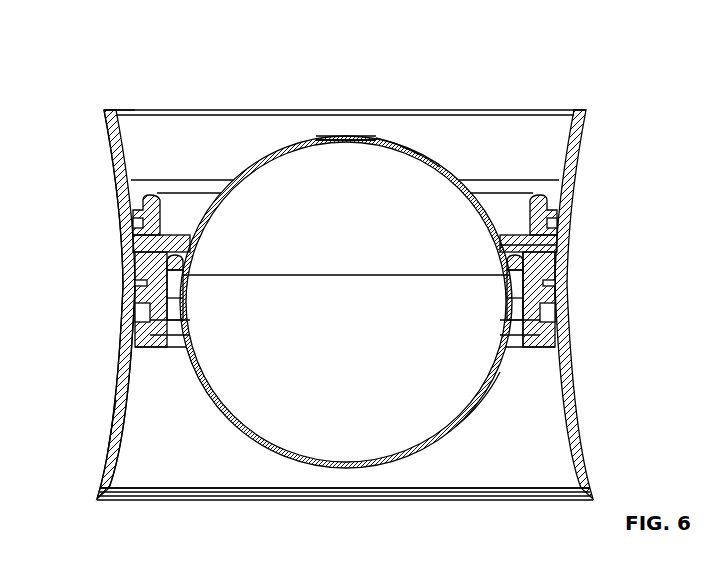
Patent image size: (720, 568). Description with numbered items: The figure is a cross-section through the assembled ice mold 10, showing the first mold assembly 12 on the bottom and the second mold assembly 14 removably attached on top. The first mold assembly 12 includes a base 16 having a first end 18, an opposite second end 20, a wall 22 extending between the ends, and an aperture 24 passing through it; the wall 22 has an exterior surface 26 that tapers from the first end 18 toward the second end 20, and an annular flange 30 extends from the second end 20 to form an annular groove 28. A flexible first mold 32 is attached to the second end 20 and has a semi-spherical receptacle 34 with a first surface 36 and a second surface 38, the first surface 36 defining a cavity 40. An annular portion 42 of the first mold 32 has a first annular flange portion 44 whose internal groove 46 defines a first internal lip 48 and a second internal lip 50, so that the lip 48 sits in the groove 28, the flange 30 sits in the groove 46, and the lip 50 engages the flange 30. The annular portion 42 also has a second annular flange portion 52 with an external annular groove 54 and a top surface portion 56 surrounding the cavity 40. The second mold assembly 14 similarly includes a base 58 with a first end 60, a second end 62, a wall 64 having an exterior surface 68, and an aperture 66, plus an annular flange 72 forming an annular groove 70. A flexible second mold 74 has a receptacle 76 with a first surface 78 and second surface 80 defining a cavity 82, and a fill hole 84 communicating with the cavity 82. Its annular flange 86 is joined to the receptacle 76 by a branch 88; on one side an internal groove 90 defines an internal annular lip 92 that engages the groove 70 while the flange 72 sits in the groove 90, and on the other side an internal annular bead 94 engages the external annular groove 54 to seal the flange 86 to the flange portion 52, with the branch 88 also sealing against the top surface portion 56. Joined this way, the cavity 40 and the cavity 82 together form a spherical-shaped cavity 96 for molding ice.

The ice mold 10 is at (512, 64).
The first mold assembly 12 is at (84, 384).
The second mold assembly 14 is at (84, 247).
The base 16 is at (115, 432).
The first end 18 is at (98, 500).
The second end 20 is at (183, 323).
The wall 22 is at (117, 393).
The aperture 24 is at (195, 447).
The exterior surface 26 is at (105, 453).
The annular groove 28 is at (140, 315).
The annular flange 30 is at (140, 300).
The first mold 32 is at (555, 308).
The receptacle 34 is at (488, 392).
The first surface 36 is at (448, 427).
The second surface 38 is at (462, 428).
The cavity 40 is at (288, 366).
The annular portion 42 is at (565, 285).
The first annular flange portion 44 is at (560, 320).
The internal groove 46 is at (540, 305).
The first internal lip 48 is at (560, 338).
The second internal lip 50 is at (540, 290).
The second annular flange portion 52 is at (560, 262).
The external annular groove 54 is at (537, 290).
The top surface portion 56 is at (545, 252).
The base 58 is at (110, 166).
The first end 60 is at (107, 110).
The second end 62 is at (140, 218).
The wall 64 is at (128, 182).
The aperture 66 is at (170, 128).
The exterior surface 68 is at (103, 130).
The annular groove 70 is at (150, 210).
The annular flange 72 is at (128, 250).
The second mold 74 is at (128, 277).
The receptacle 76 is at (345, 141).
The first surface 78 is at (418, 156).
The second surface 80 is at (400, 141).
The cavity 82 is at (276, 256).
The fill hole 84 is at (354, 135).
The annular flange 86 is at (572, 226).
The branch 88 is at (515, 235).
The internal groove 90 is at (530, 228).
The internal annular lip 92 is at (545, 210).
The internal annular bead 94 is at (522, 248).
The spherical-shaped cavity 96 is at (386, 321).